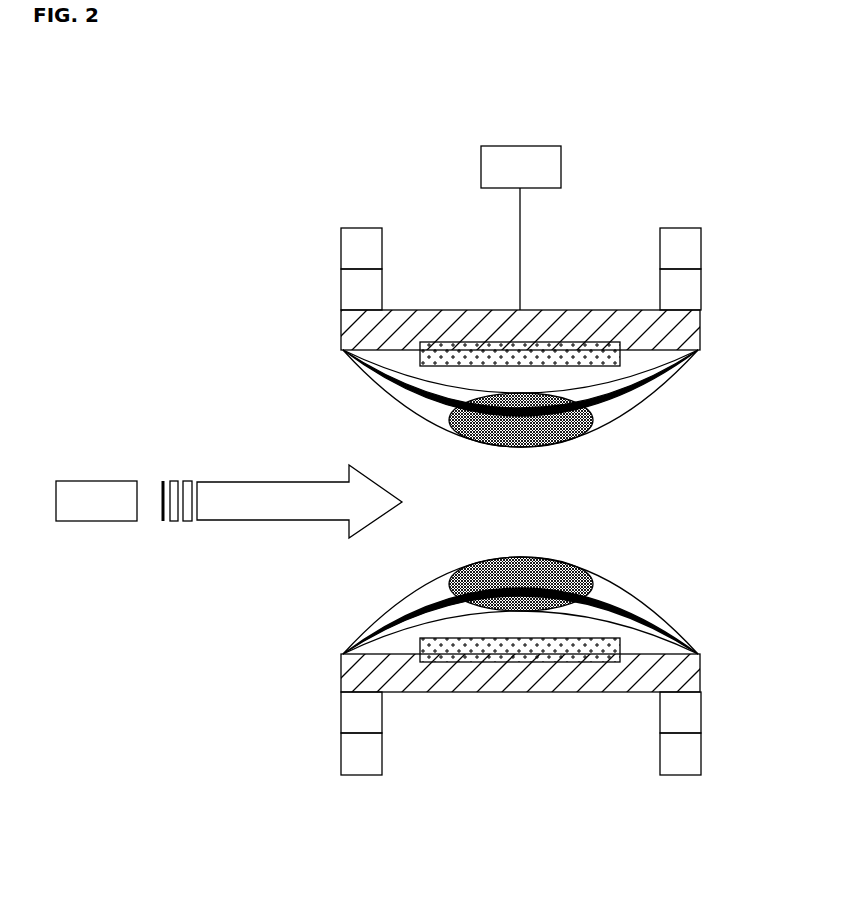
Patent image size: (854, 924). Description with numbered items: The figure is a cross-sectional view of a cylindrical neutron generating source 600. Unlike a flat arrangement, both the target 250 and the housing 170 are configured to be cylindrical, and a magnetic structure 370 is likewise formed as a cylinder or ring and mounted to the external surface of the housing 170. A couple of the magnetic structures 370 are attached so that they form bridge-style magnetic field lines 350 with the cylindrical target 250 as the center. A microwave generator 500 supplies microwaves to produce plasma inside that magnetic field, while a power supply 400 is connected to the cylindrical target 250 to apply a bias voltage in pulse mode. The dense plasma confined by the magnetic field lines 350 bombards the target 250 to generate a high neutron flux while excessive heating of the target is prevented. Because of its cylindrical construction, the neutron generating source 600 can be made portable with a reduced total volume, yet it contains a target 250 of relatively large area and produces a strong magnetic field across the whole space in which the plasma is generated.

The cylindrical neutron generating source 600 is at (256, 88).
The power supply 400 is at (521, 228).
The magnetic structure 370 is at (703, 256).
The housing 170 is at (690, 330).
The target 250 is at (597, 345).
The magnetic field lines 350 is at (619, 425).
The microwave generator 500 is at (229, 501).